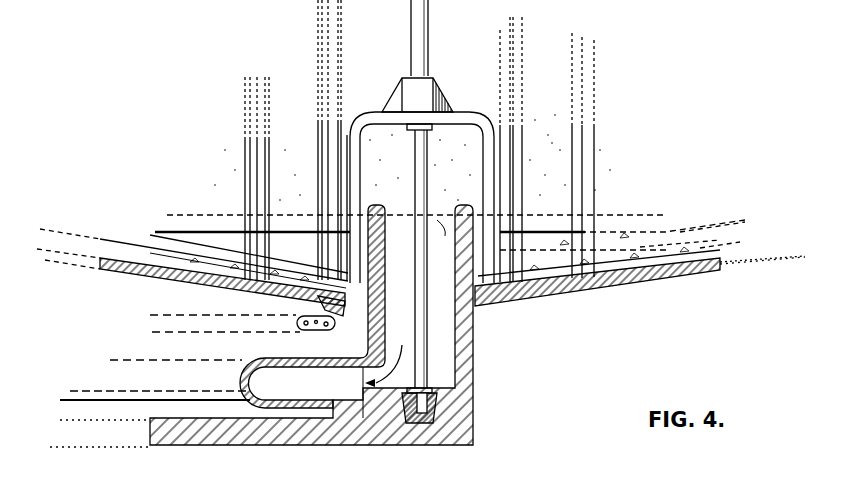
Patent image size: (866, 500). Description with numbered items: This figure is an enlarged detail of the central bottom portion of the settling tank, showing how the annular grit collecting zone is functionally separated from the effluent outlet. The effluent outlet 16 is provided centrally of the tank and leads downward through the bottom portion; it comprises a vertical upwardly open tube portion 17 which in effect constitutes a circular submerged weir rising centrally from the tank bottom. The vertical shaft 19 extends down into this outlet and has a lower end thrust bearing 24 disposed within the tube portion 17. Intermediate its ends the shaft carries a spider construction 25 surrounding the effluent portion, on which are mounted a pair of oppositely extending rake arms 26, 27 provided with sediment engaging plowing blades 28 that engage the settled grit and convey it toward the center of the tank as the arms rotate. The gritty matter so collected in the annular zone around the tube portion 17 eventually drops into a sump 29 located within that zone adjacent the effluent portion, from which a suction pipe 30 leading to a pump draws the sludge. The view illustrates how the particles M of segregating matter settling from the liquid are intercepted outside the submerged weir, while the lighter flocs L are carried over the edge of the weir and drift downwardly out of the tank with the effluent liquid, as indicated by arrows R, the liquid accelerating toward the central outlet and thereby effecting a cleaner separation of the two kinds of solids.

The effluent outlet 16 is at (460, 183).
The tube portion 17 is at (458, 276).
The vertical shaft 19 is at (411, 34).
The lower end thrust bearing 24 is at (339, 325).
The spider construction 25 is at (460, 118).
The rake arm 26 is at (166, 232).
The rake arm 27 is at (664, 238).
The sediment engaging plowing blades 28 is at (228, 268).
The sump 29 is at (333, 332).
The suction pipe 30 is at (246, 323).
The flocs L is at (552, 143).
The particles of segregating matter M is at (613, 287).
The arrows R is at (443, 237).